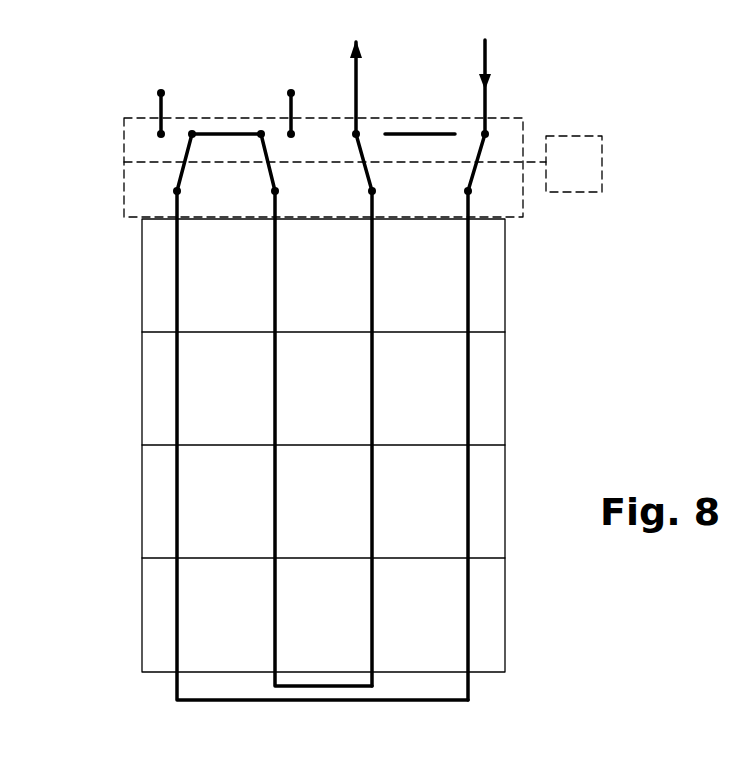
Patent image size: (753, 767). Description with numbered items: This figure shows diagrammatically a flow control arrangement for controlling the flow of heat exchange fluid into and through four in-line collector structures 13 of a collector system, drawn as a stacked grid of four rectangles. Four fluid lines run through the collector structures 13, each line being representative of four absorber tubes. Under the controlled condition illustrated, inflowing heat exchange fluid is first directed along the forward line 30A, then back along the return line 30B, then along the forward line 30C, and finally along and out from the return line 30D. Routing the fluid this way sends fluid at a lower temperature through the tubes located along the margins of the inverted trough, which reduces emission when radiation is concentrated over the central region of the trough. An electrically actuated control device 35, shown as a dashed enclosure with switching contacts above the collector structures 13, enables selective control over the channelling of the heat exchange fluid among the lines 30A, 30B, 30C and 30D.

The collector structures 13 is at (517, 367).
The electrically actuated control device 35 is at (524, 193).
The forward line 30A is at (469, 487).
The return line 30B is at (177, 522).
The forward line 30C is at (372, 605).
The return line 30D is at (275, 609).